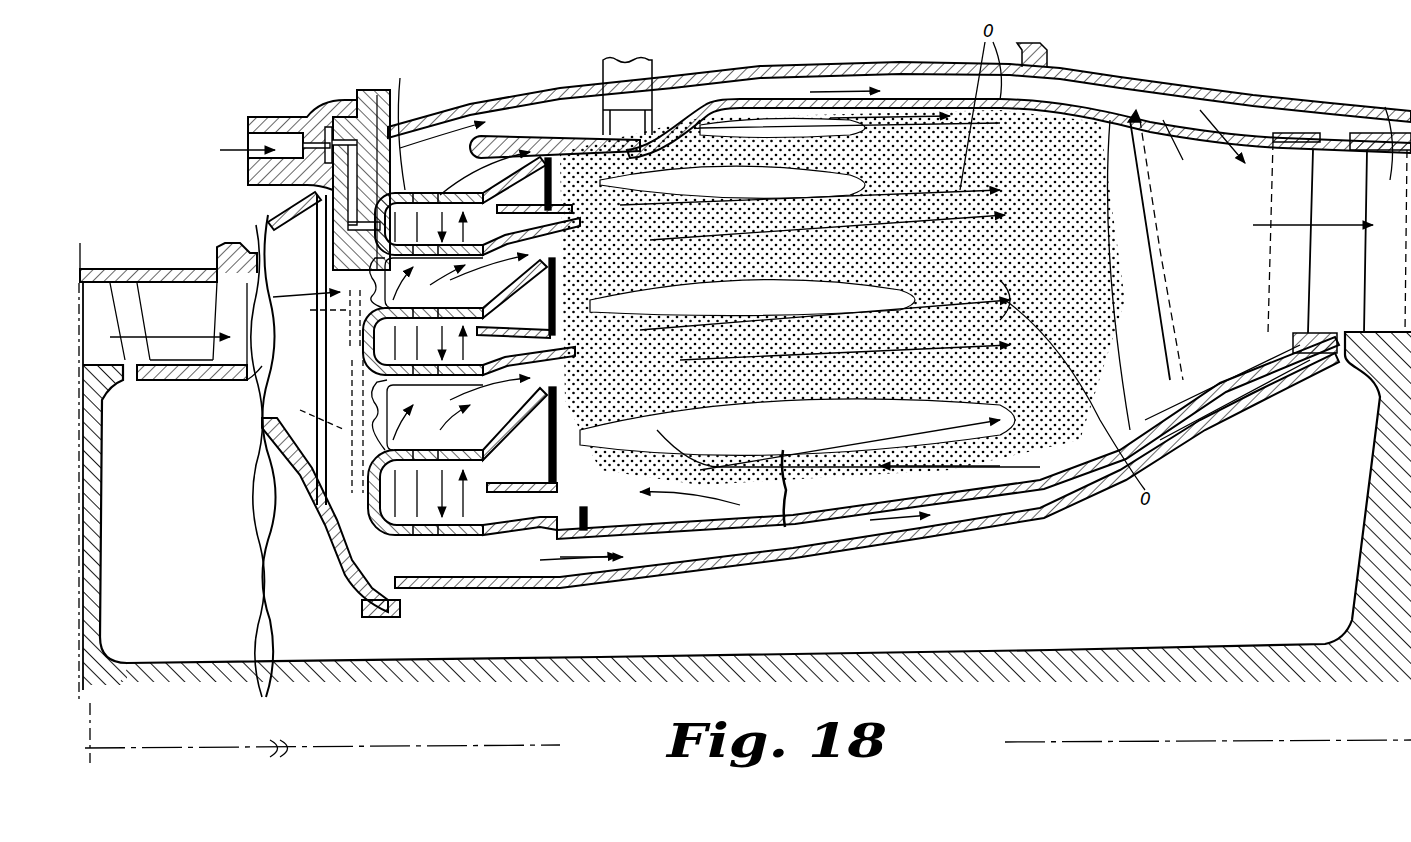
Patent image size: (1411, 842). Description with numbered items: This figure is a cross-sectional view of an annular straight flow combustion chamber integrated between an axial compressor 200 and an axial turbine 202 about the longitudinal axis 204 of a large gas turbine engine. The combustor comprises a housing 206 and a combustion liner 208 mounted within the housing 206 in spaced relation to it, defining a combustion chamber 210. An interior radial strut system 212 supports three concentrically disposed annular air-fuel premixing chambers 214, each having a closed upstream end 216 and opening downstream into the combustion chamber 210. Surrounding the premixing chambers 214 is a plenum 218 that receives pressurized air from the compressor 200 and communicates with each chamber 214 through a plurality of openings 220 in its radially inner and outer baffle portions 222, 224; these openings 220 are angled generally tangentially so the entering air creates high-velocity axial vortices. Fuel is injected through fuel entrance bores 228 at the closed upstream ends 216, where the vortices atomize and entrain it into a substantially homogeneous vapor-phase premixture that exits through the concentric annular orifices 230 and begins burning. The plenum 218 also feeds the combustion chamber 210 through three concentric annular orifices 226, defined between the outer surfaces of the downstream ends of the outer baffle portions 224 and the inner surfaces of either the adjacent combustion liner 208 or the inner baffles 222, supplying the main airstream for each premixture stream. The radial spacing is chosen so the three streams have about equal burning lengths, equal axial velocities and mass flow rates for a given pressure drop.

The axial compressor 200 is at (102, 300).
The axial turbine 202 is at (1384, 133).
The longitudinal axis 204 is at (300, 748).
The housing 206 is at (772, 68).
The combustion liner 208 is at (747, 100).
The combustion chamber 210 is at (1050, 160).
The interior radial strut system 212 is at (317, 325).
The annular air-fuel premixing chamber 214 is at (398, 185).
The closed upstream end 216 is at (278, 226).
The plenum 218 is at (437, 617).
The openings 220 is at (437, 203).
The radially inner baffle portion 222 is at (490, 560).
The radially outer baffle portion 224 is at (418, 127).
The concentric annular orifices 226 is at (547, 150).
The fuel entrance bores 228 is at (330, 195).
The concentric annular orifices 230 is at (557, 208).